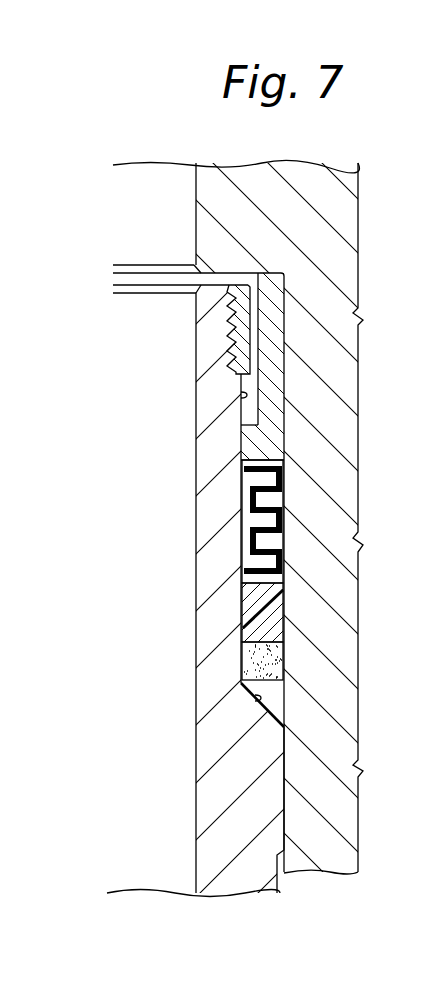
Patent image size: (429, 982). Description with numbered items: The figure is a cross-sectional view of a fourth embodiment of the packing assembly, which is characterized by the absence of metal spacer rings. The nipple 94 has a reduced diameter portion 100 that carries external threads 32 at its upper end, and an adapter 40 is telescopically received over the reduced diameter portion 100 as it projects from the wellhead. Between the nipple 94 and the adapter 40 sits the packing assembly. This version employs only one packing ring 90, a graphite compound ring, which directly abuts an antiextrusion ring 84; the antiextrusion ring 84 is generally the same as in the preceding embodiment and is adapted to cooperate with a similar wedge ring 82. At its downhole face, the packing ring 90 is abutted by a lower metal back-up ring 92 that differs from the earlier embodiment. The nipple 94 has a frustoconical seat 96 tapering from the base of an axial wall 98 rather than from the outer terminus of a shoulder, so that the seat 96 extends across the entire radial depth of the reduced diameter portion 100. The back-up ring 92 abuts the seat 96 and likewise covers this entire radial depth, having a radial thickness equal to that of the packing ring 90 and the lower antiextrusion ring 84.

The adapter 40 is at (362, 243).
The external threads 32 is at (228, 333).
The axial wall 98 is at (241, 394).
The reduced diameter portion 100 is at (202, 424).
The wedge ring 82 is at (242, 603).
The antiextrusion ring 84 is at (275, 622).
The packing ring 90 is at (272, 660).
The frustoconical seat 96 is at (258, 697).
The lower metal back-up ring 92 is at (272, 698).
The nipple 94 is at (212, 737).